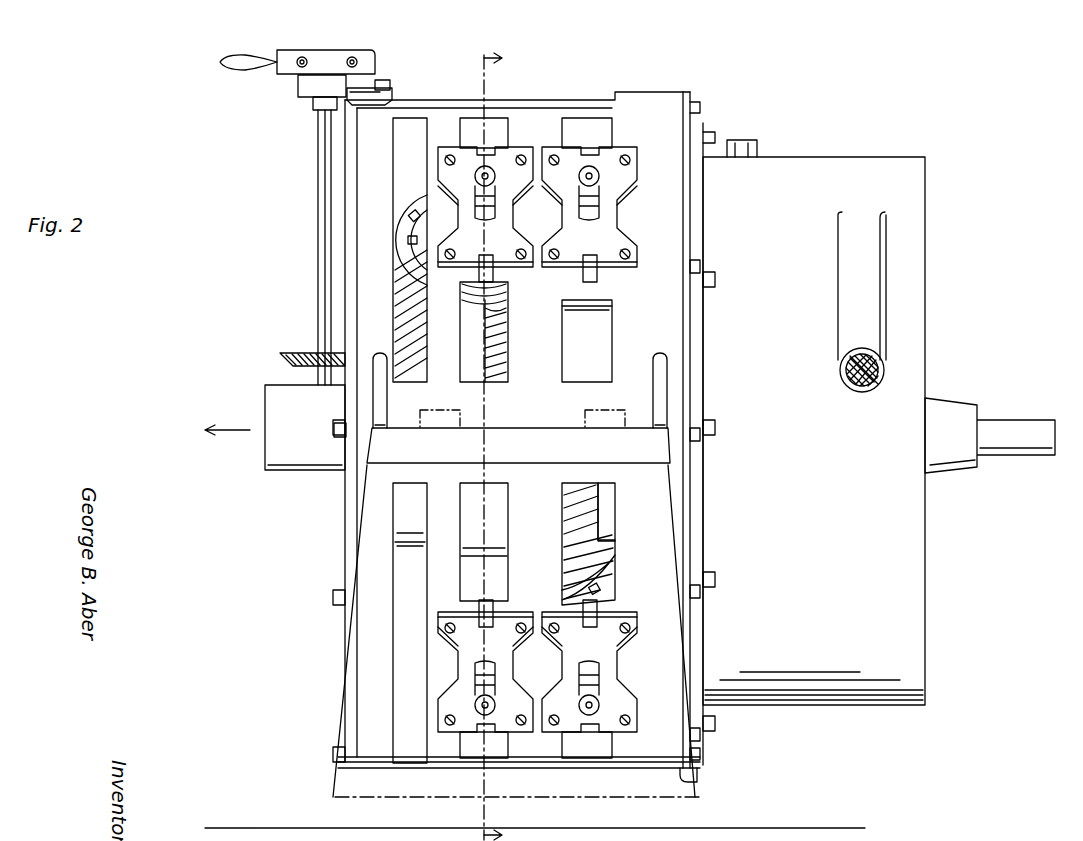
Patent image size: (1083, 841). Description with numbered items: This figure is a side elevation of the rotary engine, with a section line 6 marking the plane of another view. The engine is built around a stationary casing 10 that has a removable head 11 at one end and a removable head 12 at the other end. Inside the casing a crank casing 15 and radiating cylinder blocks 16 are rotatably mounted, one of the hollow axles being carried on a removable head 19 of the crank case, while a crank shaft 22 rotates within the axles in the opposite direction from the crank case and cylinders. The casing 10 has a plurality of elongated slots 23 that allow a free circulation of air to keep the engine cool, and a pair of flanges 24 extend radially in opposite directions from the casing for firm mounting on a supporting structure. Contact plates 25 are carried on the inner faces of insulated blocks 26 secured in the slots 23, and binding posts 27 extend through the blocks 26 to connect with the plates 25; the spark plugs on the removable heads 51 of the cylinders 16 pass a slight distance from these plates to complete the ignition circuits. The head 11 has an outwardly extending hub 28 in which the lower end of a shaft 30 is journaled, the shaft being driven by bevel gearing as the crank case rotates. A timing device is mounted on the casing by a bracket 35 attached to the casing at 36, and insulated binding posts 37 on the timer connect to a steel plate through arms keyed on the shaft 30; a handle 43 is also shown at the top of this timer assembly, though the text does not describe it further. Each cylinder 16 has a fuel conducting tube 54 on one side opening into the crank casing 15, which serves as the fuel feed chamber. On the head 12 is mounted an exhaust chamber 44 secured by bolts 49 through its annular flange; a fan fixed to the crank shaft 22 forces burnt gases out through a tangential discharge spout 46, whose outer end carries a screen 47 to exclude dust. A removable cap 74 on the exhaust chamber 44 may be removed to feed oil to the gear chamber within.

The section line 6 is at (480, 444).
The stationary casing 10 is at (645, 92).
The removable head 11 is at (343, 535).
The removable head 12 is at (698, 778).
The crank casing 15 is at (600, 355).
The cylinder blocks 16 is at (395, 297).
The removable head 19 is at (285, 353).
The crank shaft 22 is at (1015, 420).
The slots 23 is at (413, 118).
The flanges 24 is at (512, 450).
The contact plates 25 is at (580, 270).
The insulated blocks 26 is at (518, 153).
The binding posts 27 is at (490, 172).
The hub 28 is at (285, 408).
The shaft 30 is at (318, 142).
The bracket 35 is at (305, 85).
The bracket attachment 36 is at (385, 82).
The binding posts 37 is at (345, 60).
The handle 43 is at (225, 65).
The exhaust chamber 44 is at (908, 195).
The tangential discharge spout 46 is at (870, 305).
The screen 47 is at (880, 363).
The securing bolts 49 is at (716, 280).
The removable heads 51 is at (408, 222).
The fuel conducting tube 54 is at (458, 355).
The removable cap 74 is at (755, 140).